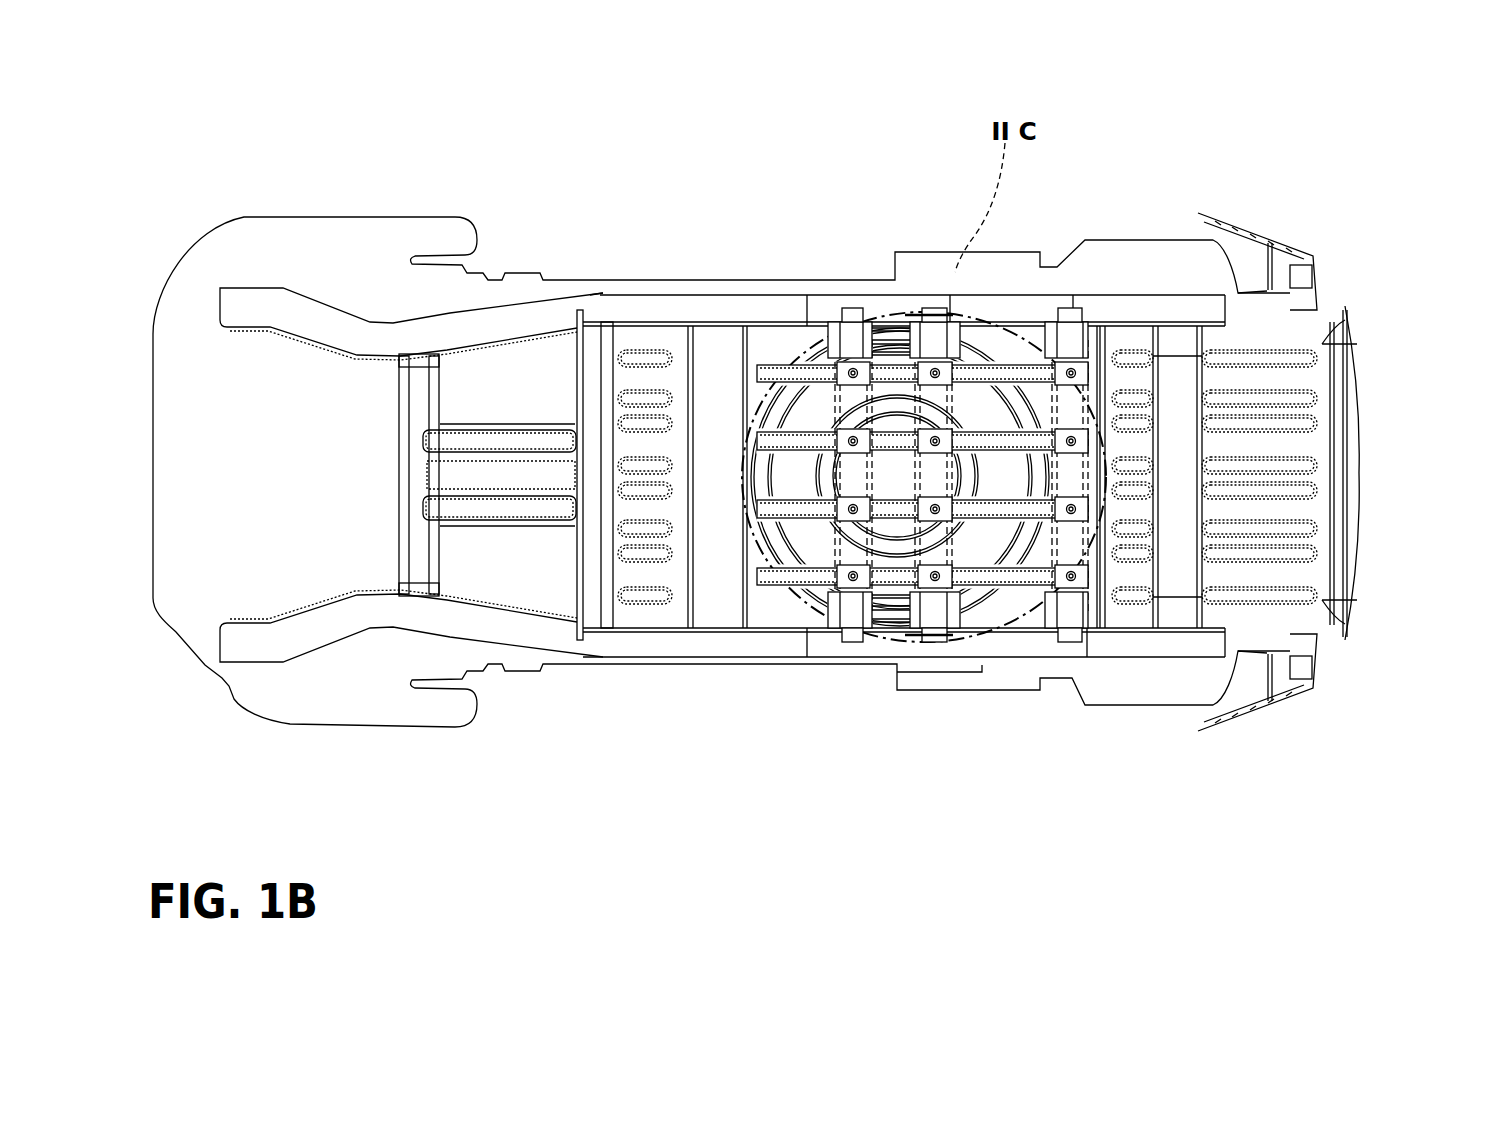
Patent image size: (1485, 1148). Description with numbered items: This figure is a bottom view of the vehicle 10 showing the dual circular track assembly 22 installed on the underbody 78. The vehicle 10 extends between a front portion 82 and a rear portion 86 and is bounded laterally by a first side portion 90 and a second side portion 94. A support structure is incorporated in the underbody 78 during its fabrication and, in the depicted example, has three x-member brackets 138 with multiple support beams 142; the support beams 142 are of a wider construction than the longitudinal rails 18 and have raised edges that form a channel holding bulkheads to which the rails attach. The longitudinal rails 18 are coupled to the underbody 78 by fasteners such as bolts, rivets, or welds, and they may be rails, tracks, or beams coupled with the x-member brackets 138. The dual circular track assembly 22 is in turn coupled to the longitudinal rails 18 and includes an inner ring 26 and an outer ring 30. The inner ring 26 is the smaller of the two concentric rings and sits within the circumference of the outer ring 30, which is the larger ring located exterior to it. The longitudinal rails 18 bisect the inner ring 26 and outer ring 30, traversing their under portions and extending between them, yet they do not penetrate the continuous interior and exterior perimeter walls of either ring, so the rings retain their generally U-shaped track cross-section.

The vehicle 10 is at (1226, 124).
The longitudinal rails 18 is at (815, 373).
The dual circular track assembly 22 is at (803, 340).
The inner ring 26 is at (973, 483).
The outer ring 30 is at (783, 463).
The underbody 78 is at (752, 640).
The front portion 82 is at (140, 406).
The rear portion 86 is at (1404, 495).
The first side portion 90 is at (700, 180).
The second side portion 94 is at (703, 786).
The x-member brackets 138 is at (847, 343).
The support beams 142 is at (1123, 343).